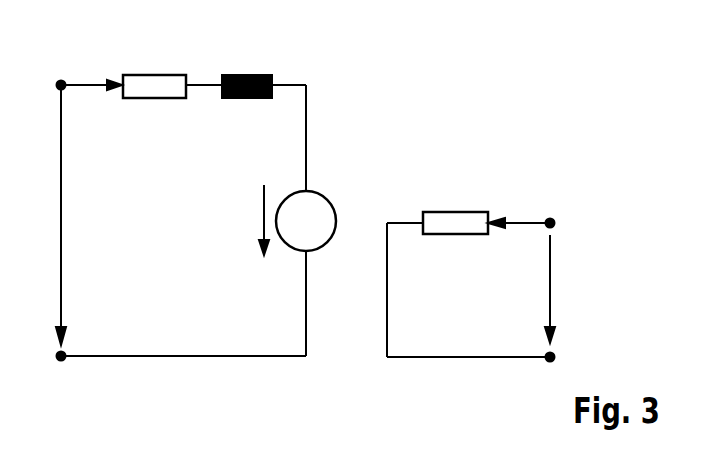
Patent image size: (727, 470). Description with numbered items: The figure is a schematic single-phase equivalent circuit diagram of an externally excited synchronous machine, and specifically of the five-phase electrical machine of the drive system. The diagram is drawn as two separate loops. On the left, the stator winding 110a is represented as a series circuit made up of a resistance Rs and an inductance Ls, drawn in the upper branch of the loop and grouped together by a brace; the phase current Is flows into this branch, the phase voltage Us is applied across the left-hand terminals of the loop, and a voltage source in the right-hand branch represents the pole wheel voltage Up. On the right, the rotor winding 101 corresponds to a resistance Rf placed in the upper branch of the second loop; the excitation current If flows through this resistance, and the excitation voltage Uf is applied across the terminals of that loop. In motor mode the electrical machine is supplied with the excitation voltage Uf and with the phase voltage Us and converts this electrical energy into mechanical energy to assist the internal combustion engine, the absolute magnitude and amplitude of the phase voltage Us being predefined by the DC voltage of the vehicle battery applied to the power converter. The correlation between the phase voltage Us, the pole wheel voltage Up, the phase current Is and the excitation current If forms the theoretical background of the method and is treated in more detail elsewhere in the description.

The stator winding 110a is at (199, 55).
The rotor winding 101 is at (483, 233).
The resistance Rs is at (154, 73).
The inductance Ls is at (247, 73).
The resistance Rf is at (455, 211).
The phase current Is is at (91, 75).
The phase voltage Us is at (49, 215).
The pole wheel voltage Up is at (252, 220).
The excitation current If is at (519, 213).
The excitation voltage Uf is at (562, 289).